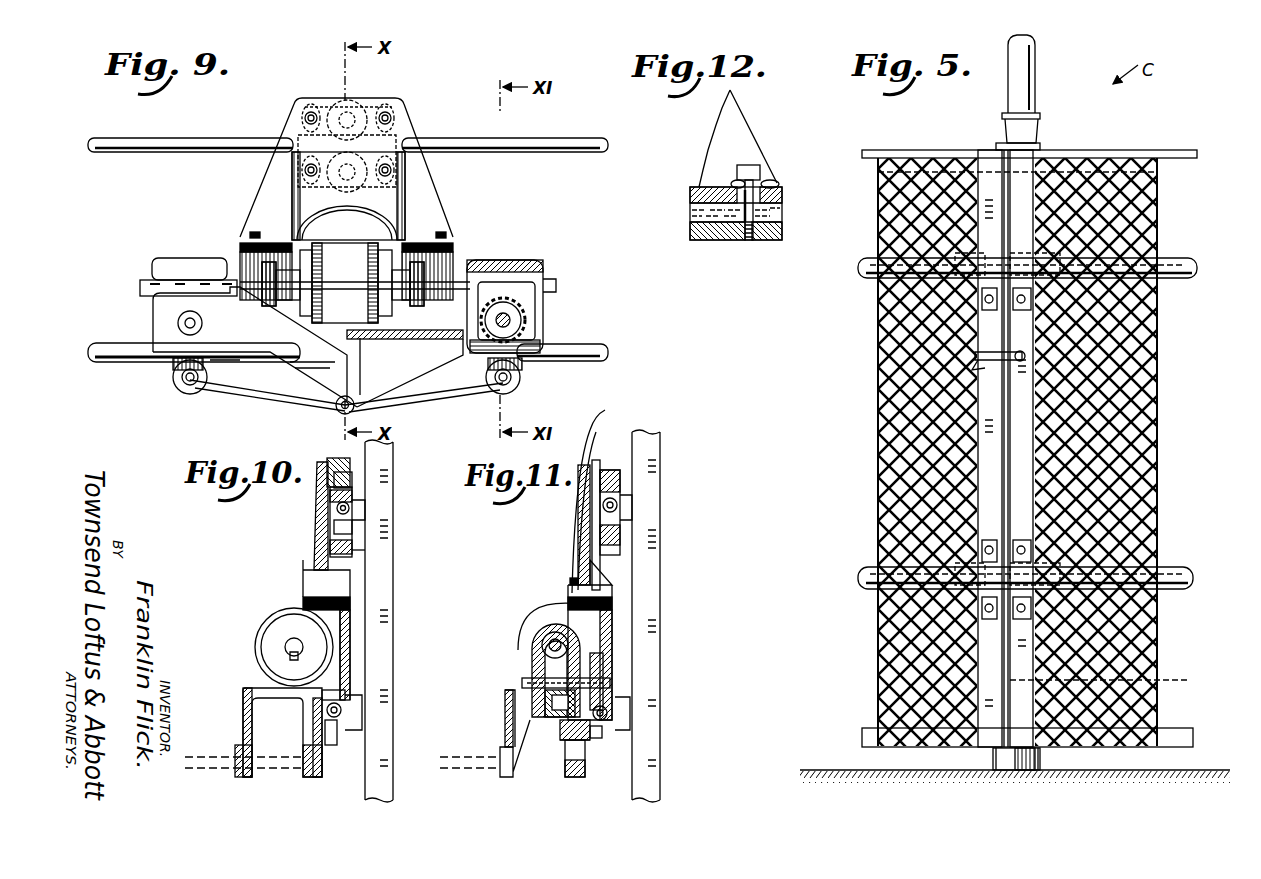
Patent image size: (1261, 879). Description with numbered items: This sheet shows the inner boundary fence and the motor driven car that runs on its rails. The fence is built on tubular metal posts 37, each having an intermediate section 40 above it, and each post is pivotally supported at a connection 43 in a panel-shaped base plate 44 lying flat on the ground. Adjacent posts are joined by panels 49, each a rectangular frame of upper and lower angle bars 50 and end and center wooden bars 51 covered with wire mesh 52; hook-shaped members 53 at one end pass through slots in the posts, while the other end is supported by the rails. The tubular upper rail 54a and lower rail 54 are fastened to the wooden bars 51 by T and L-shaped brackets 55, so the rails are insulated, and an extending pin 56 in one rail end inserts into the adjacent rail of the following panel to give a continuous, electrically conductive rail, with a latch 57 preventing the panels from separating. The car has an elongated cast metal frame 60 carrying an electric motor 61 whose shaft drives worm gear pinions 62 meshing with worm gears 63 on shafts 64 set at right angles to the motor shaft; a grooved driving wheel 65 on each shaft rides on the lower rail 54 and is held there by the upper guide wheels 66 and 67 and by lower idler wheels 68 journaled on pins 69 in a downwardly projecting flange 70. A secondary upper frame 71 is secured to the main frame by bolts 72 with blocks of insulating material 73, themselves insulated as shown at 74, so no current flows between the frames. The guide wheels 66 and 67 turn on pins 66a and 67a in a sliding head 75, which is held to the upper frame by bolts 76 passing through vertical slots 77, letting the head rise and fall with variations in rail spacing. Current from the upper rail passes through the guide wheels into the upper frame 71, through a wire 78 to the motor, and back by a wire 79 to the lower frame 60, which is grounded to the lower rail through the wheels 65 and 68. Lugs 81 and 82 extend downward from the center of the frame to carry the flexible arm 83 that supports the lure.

In FIG. 5, the tubular metal post 37 is at (1020, 760).
In FIG. 5, the intermediate section 40 is at (1040, 65).
In FIG. 5, the pivotal connection 43 is at (990, 755).
In FIG. 5, the base plate 44 is at (988, 762).
In FIG. 5, the panel 49 is at (868, 644).
In FIG. 5, the upper and lower angle bars 50 is at (922, 150).
In FIG. 5, the end and center wooden bars 51 is at (988, 152).
In FIG. 10, the end and center wooden bars 51 is at (395, 590).
In FIG. 11, the end and center wooden bars 51 is at (662, 780).
In FIG. 5, the wire mesh 52 is at (895, 374).
In FIG. 5, the hook-shaped member 53 is at (1100, 150).
In FIG. 9, the lower sectional rail 54 is at (600, 357).
In FIG. 5, the lower sectional rail 54 is at (1170, 567).
In FIG. 10, the lower sectional rail 54 is at (345, 735).
In FIG. 11, the lower sectional rail 54 is at (612, 706).
In FIG. 9, the upper sectional rail 54a is at (555, 138).
In FIG. 5, the upper sectional rail 54a is at (1175, 258).
In FIG. 10, the upper sectional rail 54a is at (338, 505).
In FIG. 11, the upper sectional rail 54a is at (618, 500).
In FIG. 5, the T and L-shaped brackets 55 is at (985, 293).
In FIG. 10, the T and L-shaped brackets 55 is at (366, 510).
In FIG. 11, the T and L-shaped brackets 55 is at (632, 508).
In FIG. 5, the extending pin 56 is at (880, 243).
In FIG. 5, the latch 57 is at (1030, 355).
In FIG. 9, the cast metal frame 60 is at (292, 386).
In FIG. 12, the cast metal frame 60 is at (715, 240).
In FIG. 10, the cast metal frame 60 is at (352, 648).
In FIG. 11, the cast metal frame 60 is at (616, 650).
In FIG. 9, the electric motor 61 is at (355, 283).
In FIG. 10, the electric motor 61 is at (262, 625).
In FIG. 11, the electric motor 61 is at (526, 625).
In FIG. 9, the worm gear pinion 62 is at (530, 262).
In FIG. 11, the worm gear pinion 62 is at (535, 660).
In FIG. 9, the worm gear 63 is at (522, 316).
In FIG. 11, the worm gear 63 is at (545, 700).
In FIG. 9, the shaft 64 is at (511, 323).
In FIG. 11, the shaft 64 is at (522, 682).
In FIG. 10, the grooved driving wheel 65 is at (340, 697).
In FIG. 11, the grooved driving wheel 65 is at (603, 668).
In FIG. 9, the upper guide wheel 66 is at (368, 100).
In FIG. 10, the upper guide wheel 66 is at (352, 468).
In FIG. 11, the upper guide wheel 66 is at (620, 468).
In FIG. 9, the pin 66a is at (325, 100).
In FIG. 10, the pin 66a is at (350, 482).
In FIG. 9, the upper guide wheel 67 is at (372, 160).
In FIG. 10, the upper guide wheel 67 is at (352, 553).
In FIG. 11, the upper guide wheel 67 is at (620, 555).
In FIG. 9, the pin 67a is at (292, 174).
In FIG. 10, the pin 67a is at (352, 530).
In FIG. 9, the lower idler wheel 68 is at (178, 384).
In FIG. 10, the lower idler wheel 68 is at (332, 748).
In FIG. 11, the lower idler wheel 68 is at (604, 748).
In FIG. 9, the pin 69 is at (186, 392).
In FIG. 11, the pin 69 is at (610, 735).
In FIG. 9, the downwardly projecting flange 70 is at (176, 364).
In FIG. 11, the downwardly projecting flange 70 is at (568, 735).
In FIG. 9, the secondary or upper metal frame 71 is at (286, 188).
In FIG. 12, the secondary or upper metal frame 71 is at (744, 113).
In FIG. 10, the secondary or upper metal frame 71 is at (312, 549).
In FIG. 11, the secondary or upper metal frame 71 is at (575, 555).
In FIG. 9, the bolt 72 is at (252, 236).
In FIG. 12, the bolt 72 is at (760, 165).
In FIG. 11, the bolt 72 is at (606, 588).
In FIG. 9, the block of insulating material 73 is at (238, 247).
In FIG. 12, the block of insulating material 73 is at (782, 216).
In FIG. 10, the block of insulating material 73 is at (303, 600).
In FIG. 11, the block of insulating material 73 is at (614, 603).
In FIG. 12, the insulation 74 is at (780, 186).
In FIG. 9, the sliding head 75 is at (340, 100).
In FIG. 10, the sliding head 75 is at (335, 458).
In FIG. 11, the sliding head 75 is at (598, 460).
In FIG. 9, the bolt 76 is at (304, 117).
In FIG. 11, the bolt 76 is at (598, 418).
In FIG. 9, the vertical slot 77 is at (302, 102).
In FIG. 9, the wire 78 is at (423, 207).
In FIG. 9, the wire 79 is at (385, 337).
In FIG. 9, the lug 81 is at (338, 407).
In FIG. 10, the lug 81 is at (240, 777).
In FIG. 11, the lug 81 is at (500, 778).
In FIG. 9, the lug 82 is at (356, 406).
In FIG. 10, the lug 82 is at (305, 778).
In FIG. 11, the lug 82 is at (575, 778).
In FIG. 10, the arm 83 is at (185, 760).
In FIG. 11, the arm 83 is at (440, 760).